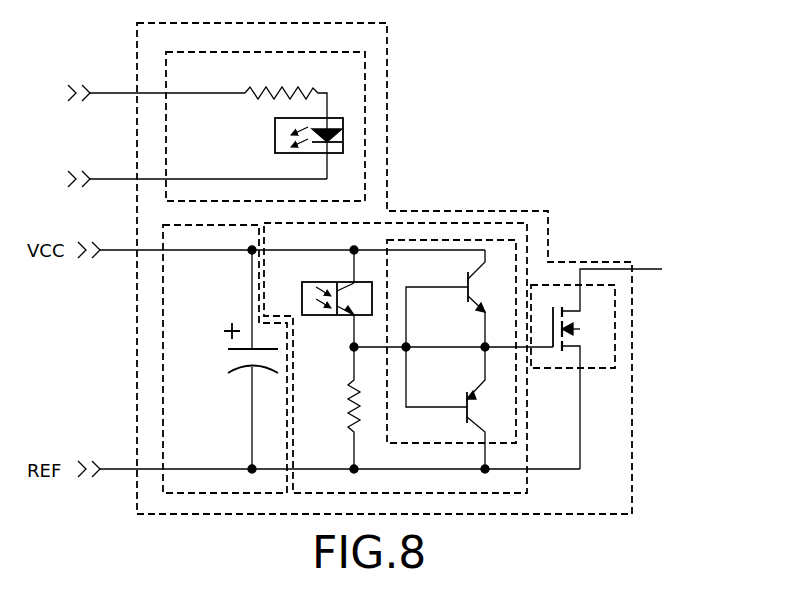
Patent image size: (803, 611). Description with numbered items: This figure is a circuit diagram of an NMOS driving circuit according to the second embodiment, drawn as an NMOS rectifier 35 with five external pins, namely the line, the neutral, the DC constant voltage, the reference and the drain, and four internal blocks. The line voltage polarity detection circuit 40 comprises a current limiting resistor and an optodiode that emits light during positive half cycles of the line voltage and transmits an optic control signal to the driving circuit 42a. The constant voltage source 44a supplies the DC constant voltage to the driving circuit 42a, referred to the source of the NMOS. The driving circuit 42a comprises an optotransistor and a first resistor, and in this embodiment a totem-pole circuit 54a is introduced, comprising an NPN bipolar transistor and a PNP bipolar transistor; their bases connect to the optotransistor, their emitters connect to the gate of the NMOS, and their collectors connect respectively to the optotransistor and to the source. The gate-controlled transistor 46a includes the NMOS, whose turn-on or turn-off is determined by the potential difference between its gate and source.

The NMOS rectifier 35 is at (450, 212).
The line voltage polarity detection circuit 40 is at (365, 148).
The driving circuit 42a is at (523, 222).
The constant voltage source 44a is at (163, 347).
The gate-controlled transistor 46a is at (617, 355).
The totem-pole circuit 54a is at (516, 262).